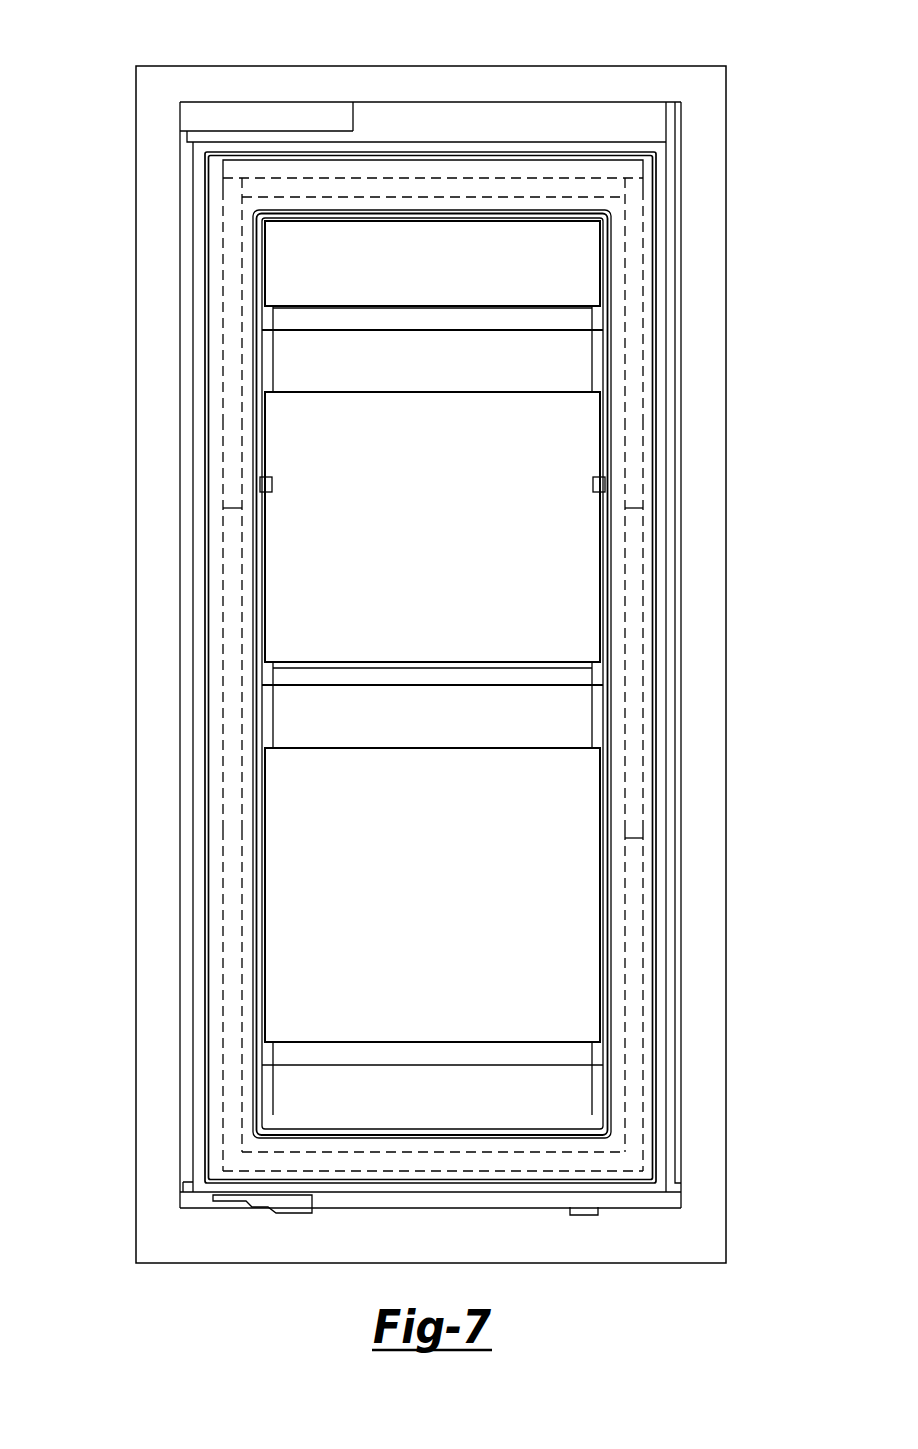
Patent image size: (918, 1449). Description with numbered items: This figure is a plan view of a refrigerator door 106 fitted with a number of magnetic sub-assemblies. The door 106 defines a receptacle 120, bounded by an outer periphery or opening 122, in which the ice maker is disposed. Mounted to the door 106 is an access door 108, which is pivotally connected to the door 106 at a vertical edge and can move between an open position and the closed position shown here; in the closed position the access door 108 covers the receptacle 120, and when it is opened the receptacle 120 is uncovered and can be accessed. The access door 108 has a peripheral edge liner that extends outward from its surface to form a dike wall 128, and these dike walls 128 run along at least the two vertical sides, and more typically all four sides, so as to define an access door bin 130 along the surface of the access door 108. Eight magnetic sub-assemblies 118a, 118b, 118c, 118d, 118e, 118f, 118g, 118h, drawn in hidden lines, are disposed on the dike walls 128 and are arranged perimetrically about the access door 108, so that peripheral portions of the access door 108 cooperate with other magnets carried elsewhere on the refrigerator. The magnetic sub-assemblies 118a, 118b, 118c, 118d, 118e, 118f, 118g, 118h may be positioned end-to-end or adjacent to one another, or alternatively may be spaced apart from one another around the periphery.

The door 106 is at (160, 1200).
The access door 108 is at (657, 174).
The magnetic sub-assembly 118a is at (250, 193).
The magnetic sub-assembly 118b is at (232, 310).
The magnetic sub-assembly 118c is at (232, 665).
The magnetic sub-assembly 118d is at (232, 1001).
The magnetic sub-assembly 118e is at (273, 1160).
The magnetic sub-assembly 118f is at (637, 1000).
The magnetic sub-assembly 118g is at (637, 665).
The magnetic sub-assembly 118h is at (640, 308).
The receptacle 120 is at (545, 920).
The opening 122 is at (568, 141).
The dike wall 128 is at (635, 707).
The access door bin 130 is at (302, 1103).